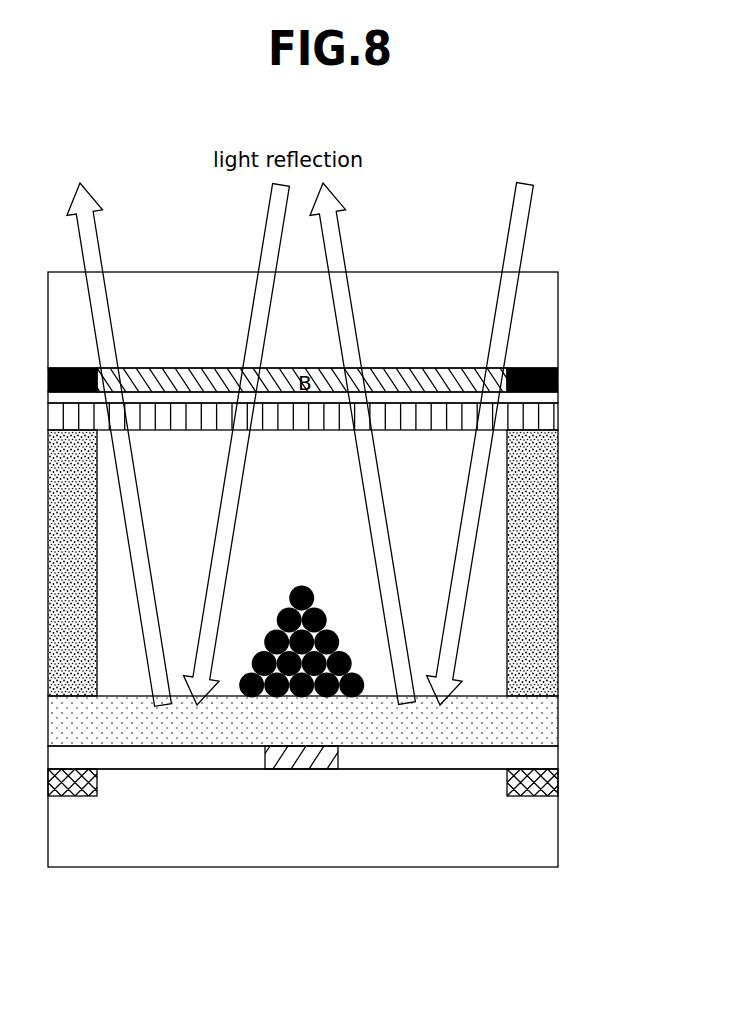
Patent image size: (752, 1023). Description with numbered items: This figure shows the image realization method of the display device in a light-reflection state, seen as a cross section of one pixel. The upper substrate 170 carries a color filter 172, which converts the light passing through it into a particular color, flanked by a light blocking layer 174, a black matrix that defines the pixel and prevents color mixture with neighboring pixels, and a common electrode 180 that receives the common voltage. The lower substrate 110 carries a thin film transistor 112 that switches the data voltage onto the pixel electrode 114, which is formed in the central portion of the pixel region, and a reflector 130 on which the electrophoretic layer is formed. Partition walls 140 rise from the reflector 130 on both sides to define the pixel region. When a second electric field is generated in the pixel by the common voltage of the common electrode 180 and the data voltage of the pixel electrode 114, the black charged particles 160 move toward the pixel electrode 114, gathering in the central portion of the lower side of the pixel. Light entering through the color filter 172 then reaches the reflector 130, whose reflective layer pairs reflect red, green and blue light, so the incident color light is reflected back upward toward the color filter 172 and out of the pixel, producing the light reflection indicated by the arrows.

The lower substrate 110 is at (559, 838).
The thin film transistor 112 is at (540, 782).
The pixel electrode 114 is at (302, 762).
The reflector 130 is at (559, 725).
The partition wall 140 is at (559, 610).
The charged particles 160 is at (350, 665).
The upper substrate 170 is at (559, 318).
The color filter 172 is at (423, 373).
The light blocking layer 174 is at (559, 382).
The common electrode 180 is at (543, 418).